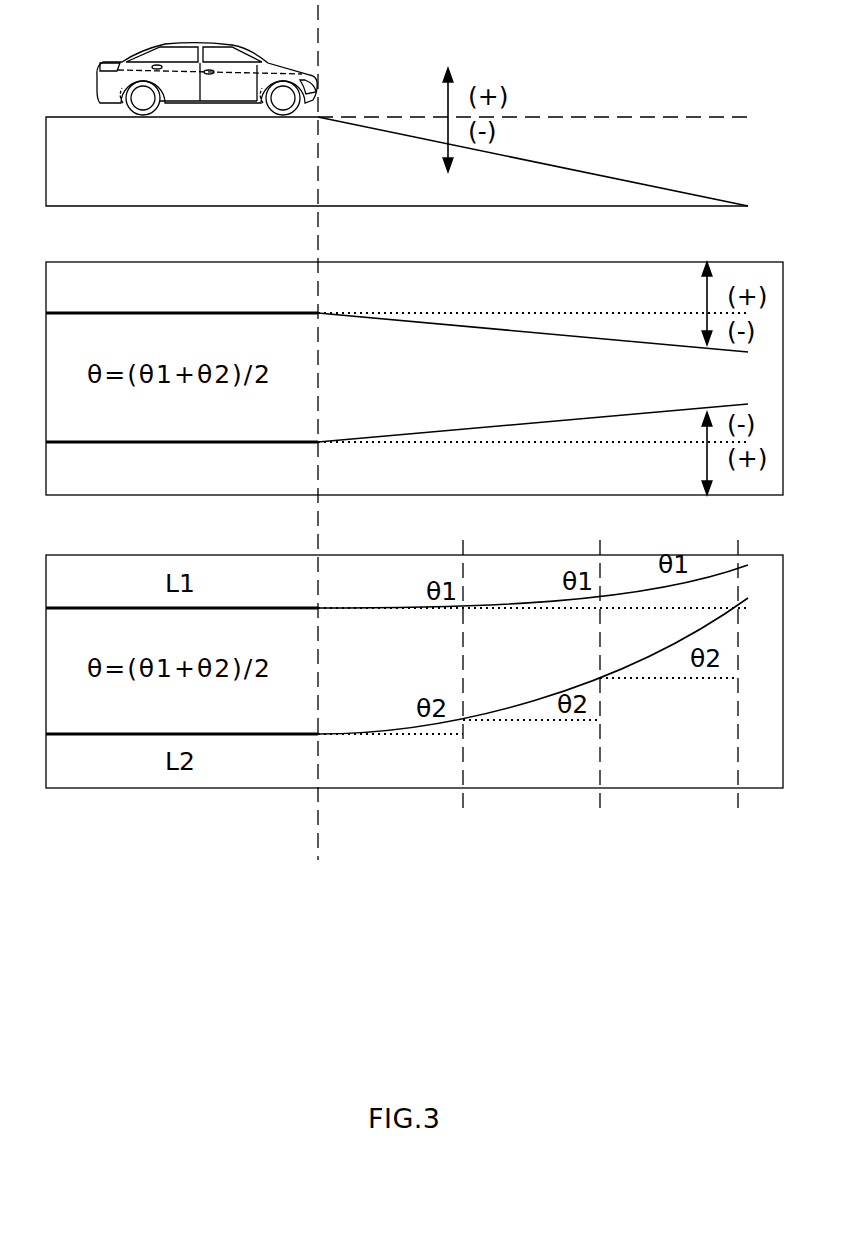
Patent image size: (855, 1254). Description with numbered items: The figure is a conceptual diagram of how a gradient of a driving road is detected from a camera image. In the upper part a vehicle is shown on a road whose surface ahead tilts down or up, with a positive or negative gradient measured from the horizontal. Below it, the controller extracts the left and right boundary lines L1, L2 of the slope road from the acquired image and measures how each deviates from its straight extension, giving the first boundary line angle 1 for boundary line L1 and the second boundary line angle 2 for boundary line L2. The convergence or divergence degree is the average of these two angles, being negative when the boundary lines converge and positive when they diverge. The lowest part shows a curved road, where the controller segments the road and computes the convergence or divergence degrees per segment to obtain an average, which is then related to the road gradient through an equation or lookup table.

The left boundary line L1 is at (182, 294).
The right boundary line L2 is at (182, 463).
The first boundary line angle θ 1 is at (533, 332).
The second boundary line angle θ 2 is at (533, 423).